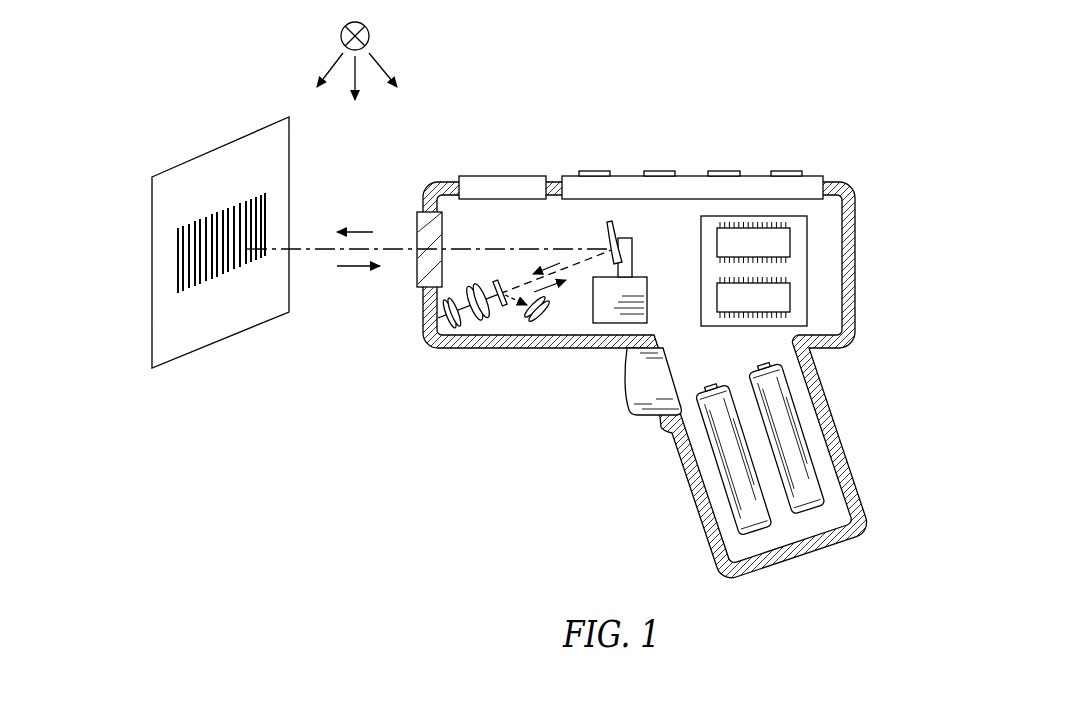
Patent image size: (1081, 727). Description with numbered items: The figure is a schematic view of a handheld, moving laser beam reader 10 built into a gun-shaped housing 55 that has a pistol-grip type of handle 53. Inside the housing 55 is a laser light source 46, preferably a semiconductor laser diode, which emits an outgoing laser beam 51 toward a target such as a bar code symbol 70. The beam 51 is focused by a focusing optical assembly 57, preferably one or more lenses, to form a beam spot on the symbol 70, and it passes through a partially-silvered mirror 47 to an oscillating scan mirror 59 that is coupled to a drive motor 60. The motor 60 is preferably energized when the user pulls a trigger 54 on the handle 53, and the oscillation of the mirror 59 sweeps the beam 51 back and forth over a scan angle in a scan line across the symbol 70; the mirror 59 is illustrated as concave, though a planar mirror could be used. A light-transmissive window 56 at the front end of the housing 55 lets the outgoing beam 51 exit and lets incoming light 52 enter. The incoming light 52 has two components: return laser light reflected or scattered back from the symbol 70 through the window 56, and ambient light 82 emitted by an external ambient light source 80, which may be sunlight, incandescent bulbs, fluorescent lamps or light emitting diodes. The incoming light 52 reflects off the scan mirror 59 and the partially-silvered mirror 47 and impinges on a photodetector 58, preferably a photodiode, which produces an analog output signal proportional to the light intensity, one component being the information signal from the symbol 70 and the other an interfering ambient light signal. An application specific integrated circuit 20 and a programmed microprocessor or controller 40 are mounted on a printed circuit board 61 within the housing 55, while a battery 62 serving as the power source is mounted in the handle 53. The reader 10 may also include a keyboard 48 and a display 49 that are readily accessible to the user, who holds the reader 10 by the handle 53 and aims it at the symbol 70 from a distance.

The moving laser beam reader 10 is at (485, 448).
The application specific integrated circuit (ASIC) 20 is at (783, 297).
The microprocessor 40 is at (780, 240).
The laser light source 46 is at (452, 323).
The partially-silvered mirror 47 is at (500, 307).
The keyboard 48 is at (763, 181).
The display 49 is at (481, 180).
The outgoing laser beam 51 is at (367, 229).
The incoming light 52 is at (346, 268).
The handle 53 is at (690, 493).
The trigger 54 is at (633, 412).
The housing 55 is at (853, 333).
The light-transmissive window 56 is at (417, 213).
The focusing optical assembly 57 is at (480, 316).
The photodetector 58 is at (538, 320).
The oscillating scan mirror 59 is at (604, 238).
The drive motor 60 is at (604, 316).
The printed circuit board 61 is at (807, 270).
The battery 62 is at (812, 515).
The bar code symbol 70 is at (257, 194).
The ambient light source 80 is at (369, 35).
The ambient light 82 is at (357, 86).